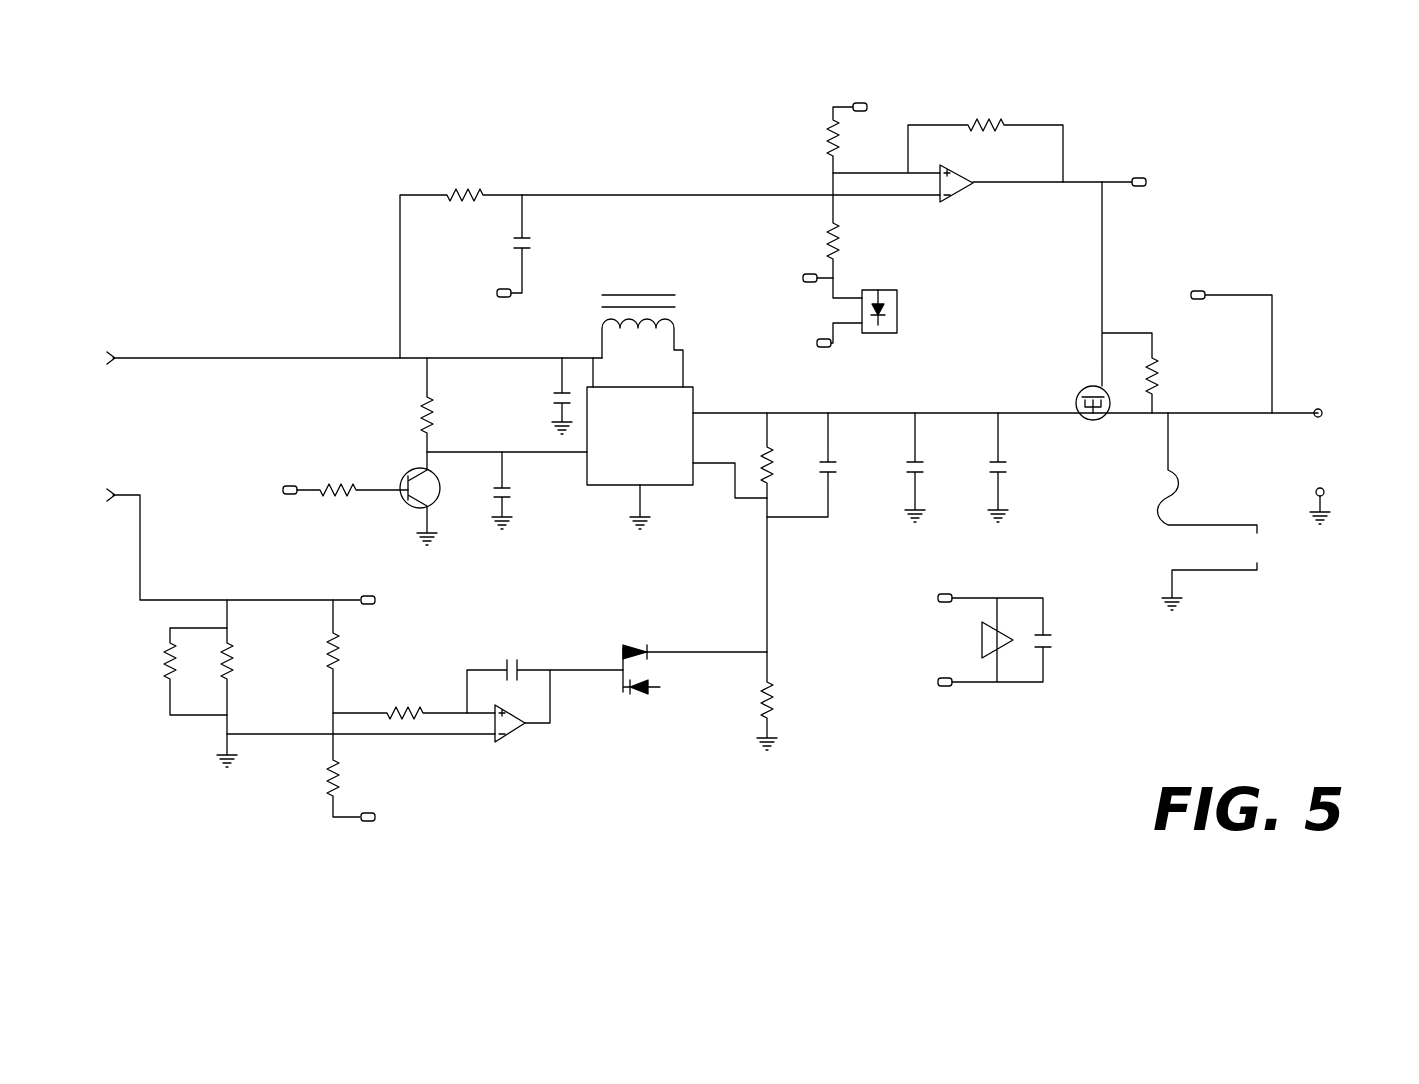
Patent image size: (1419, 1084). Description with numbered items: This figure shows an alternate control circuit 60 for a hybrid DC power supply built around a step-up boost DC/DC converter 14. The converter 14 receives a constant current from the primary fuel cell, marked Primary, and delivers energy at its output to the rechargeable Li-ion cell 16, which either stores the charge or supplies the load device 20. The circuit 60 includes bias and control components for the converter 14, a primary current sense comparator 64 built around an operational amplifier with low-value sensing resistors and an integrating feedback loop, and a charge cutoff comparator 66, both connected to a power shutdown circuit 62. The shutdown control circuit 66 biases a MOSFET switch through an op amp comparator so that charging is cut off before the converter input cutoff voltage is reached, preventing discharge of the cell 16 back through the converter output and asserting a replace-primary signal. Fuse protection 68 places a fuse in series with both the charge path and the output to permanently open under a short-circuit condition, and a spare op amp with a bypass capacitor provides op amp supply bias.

The DC/DC converter 14 is at (162, 461).
The rechargeable cell 16 is at (1315, 548).
The load device 20 is at (1333, 476).
The step-up DC/DC converter circuit 60 is at (312, 188).
The power shutdown circuit 62 is at (582, 540).
The primary current sense comparator 64 is at (662, 756).
The shutdown control circuit 66 is at (962, 288).
The fuse circuit 68 is at (1103, 499).